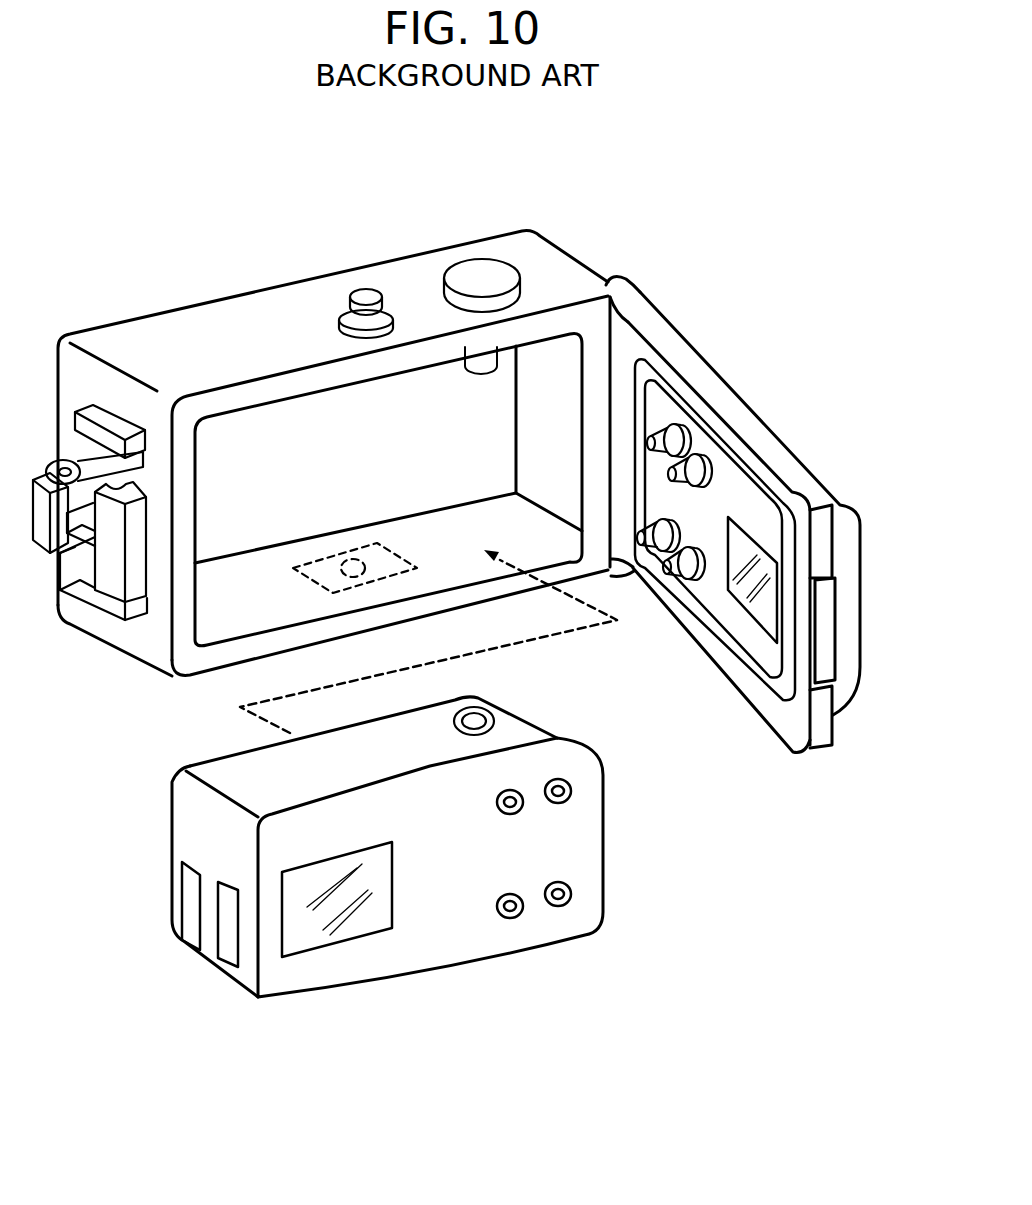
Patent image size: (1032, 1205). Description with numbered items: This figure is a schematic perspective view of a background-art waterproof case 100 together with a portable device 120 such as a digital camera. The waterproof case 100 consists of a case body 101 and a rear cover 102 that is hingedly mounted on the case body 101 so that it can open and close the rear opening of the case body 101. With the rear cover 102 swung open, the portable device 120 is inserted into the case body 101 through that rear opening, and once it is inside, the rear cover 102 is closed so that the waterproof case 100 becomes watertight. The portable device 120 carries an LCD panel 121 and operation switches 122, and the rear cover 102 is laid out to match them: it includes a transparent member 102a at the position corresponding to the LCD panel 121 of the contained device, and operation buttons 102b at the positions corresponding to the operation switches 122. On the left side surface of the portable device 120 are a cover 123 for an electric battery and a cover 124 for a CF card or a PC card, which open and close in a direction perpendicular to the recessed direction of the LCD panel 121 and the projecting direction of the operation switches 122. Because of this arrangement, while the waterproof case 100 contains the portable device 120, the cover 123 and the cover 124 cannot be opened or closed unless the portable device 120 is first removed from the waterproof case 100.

The waterproof case 100 is at (280, 220).
The case body 101 is at (567, 252).
The rear cover 102 is at (758, 442).
The transparent member 102a is at (764, 612).
The operation buttons 102b is at (700, 462).
The portable device 120 is at (550, 961).
The LCD panel 121 is at (363, 926).
The operation switches 122 is at (512, 892).
The cover for electric battery 123 is at (188, 940).
The cover for a CF card or a PC card 124 is at (232, 955).